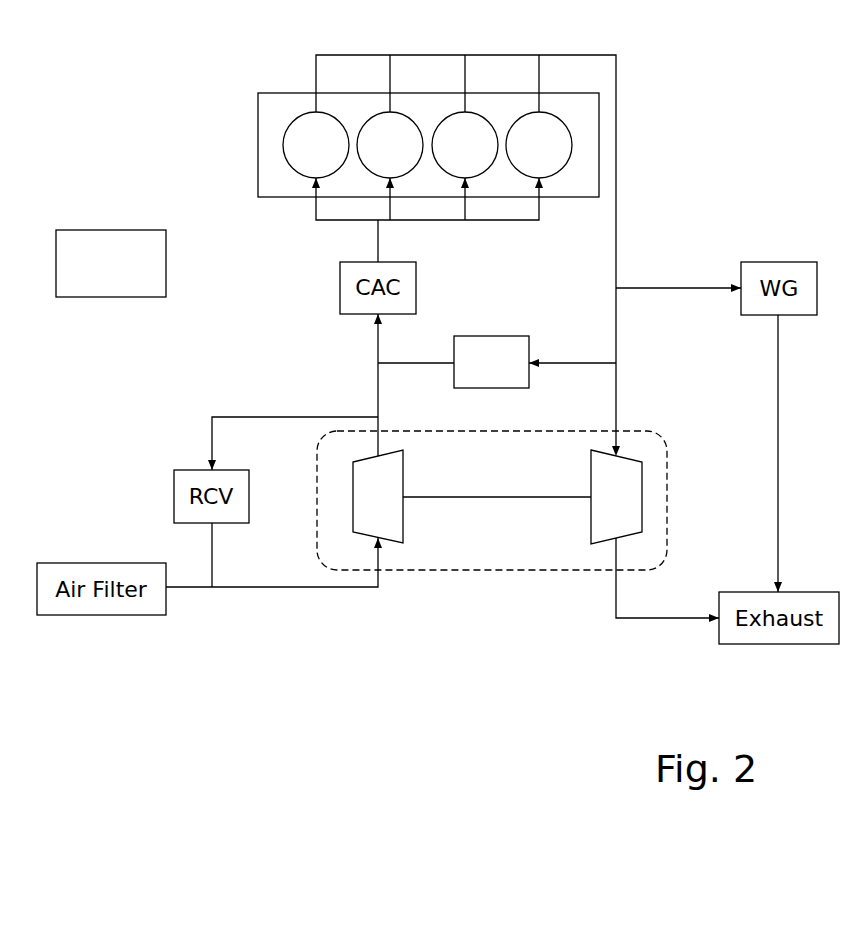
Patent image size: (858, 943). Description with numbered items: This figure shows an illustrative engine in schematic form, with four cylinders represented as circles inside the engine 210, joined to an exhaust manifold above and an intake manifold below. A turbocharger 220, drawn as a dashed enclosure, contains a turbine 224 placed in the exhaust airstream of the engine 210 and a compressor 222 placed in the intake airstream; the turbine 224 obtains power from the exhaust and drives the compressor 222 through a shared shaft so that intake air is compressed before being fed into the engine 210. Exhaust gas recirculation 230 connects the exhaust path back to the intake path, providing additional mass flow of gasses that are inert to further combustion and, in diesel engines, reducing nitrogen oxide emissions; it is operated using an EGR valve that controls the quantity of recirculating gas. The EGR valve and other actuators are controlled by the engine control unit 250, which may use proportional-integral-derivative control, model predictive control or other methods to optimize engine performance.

The engine 210 is at (394, 252).
The turbocharger 220 is at (521, 522).
The compressor 222 is at (428, 538).
The turbine 224 is at (658, 481).
The exhaust gas recirculation (EGR) 230 is at (497, 345).
The engine control unit (ECU) 250 is at (99, 250).